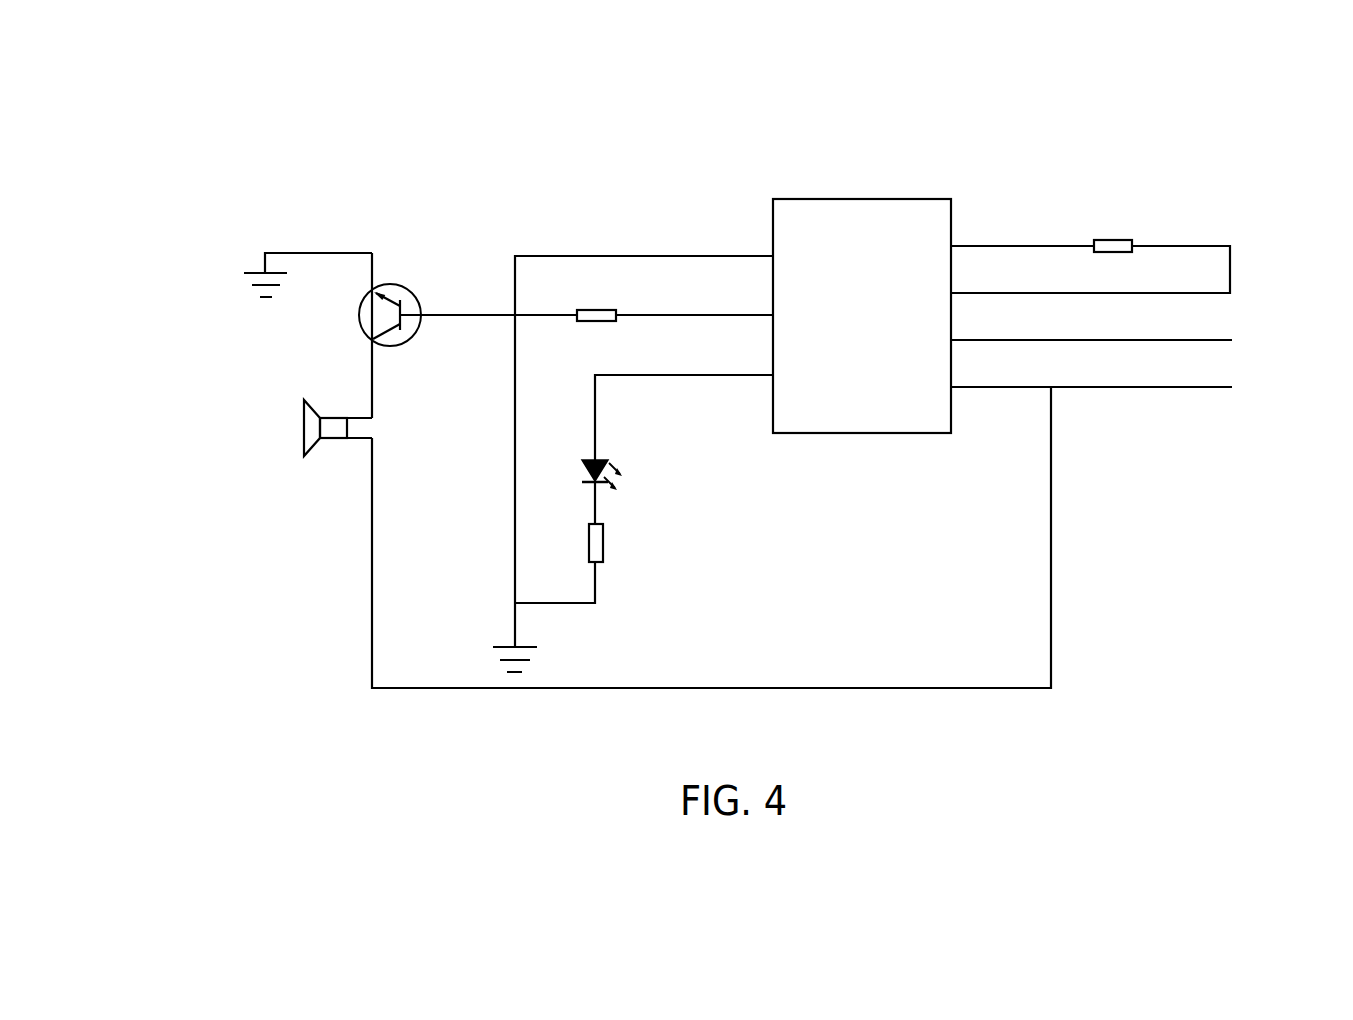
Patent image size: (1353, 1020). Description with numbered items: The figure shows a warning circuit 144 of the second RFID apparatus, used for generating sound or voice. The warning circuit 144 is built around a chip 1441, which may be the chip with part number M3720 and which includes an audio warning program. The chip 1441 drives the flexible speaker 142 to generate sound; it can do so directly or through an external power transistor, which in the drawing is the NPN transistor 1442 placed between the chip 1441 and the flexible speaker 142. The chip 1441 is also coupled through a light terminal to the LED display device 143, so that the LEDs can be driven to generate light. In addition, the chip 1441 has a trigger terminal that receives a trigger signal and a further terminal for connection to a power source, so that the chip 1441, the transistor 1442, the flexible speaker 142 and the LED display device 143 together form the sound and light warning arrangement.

The warning circuit 144 is at (266, 156).
The chip 1441 is at (933, 197).
The NPN transistor Q1 1442 is at (397, 262).
The flexible speaker 142 is at (288, 476).
The LED display device 143 is at (720, 477).